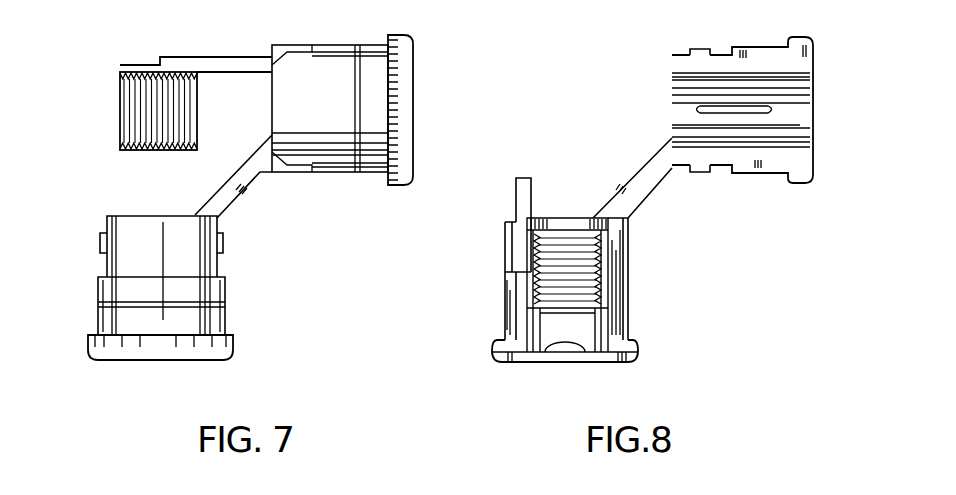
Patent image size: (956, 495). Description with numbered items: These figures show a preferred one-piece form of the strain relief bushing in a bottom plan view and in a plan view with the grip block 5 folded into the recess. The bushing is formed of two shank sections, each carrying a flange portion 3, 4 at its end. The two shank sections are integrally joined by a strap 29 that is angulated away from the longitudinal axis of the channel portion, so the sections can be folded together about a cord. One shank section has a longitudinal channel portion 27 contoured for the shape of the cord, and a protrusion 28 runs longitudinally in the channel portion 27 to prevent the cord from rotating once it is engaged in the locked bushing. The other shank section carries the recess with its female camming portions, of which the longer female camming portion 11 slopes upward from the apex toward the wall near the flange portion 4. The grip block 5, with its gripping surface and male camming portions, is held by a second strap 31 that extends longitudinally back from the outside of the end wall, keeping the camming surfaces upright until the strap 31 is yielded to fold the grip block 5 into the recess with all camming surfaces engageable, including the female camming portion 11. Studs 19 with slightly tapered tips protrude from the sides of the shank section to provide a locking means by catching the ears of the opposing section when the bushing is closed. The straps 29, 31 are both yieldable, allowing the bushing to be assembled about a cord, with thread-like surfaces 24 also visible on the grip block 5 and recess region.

In FIG. 7, the flange portion 3 is at (232, 352).
In FIG. 8, the flange portion 3 is at (808, 176).
In FIG. 7, the flange portion 4 is at (408, 50).
In FIG. 8, the flange portion 4 is at (636, 352).
In FIG. 7, the grip block 5 is at (120, 125).
In FIG. 8, the grip block 5 is at (600, 295).
In FIG. 8, the female camming portion 11 is at (597, 335).
In FIG. 7, the studs 19 is at (100, 237).
In FIG. 8, the studs 19 is at (699, 48).
In FIG. 7, the threads 24 is at (140, 107).
In FIG. 8, the threads 24 is at (585, 280).
In FIG. 8, the longitudinal channel portion 27 is at (800, 127).
In FIG. 8, the protrusion 28 is at (772, 113).
In FIG. 7, the strap 29 is at (245, 192).
In FIG. 8, the strap 29 is at (641, 189).
In FIG. 7, the strap 31 is at (201, 56).
In FIG. 8, the strap 31 is at (524, 185).